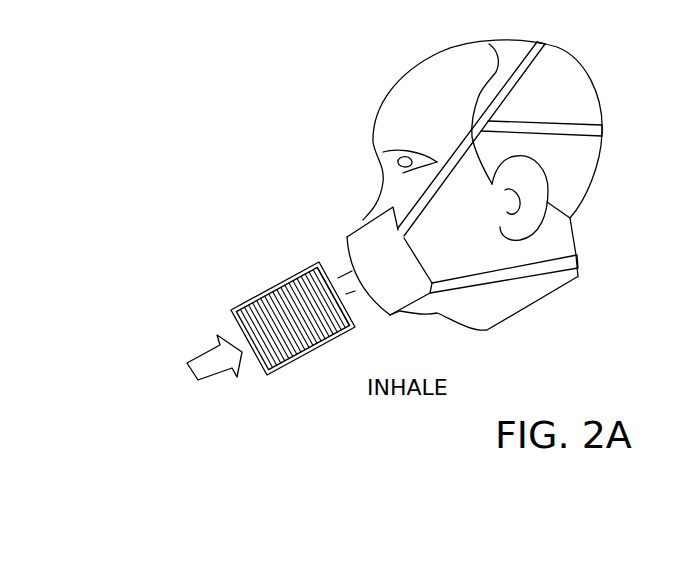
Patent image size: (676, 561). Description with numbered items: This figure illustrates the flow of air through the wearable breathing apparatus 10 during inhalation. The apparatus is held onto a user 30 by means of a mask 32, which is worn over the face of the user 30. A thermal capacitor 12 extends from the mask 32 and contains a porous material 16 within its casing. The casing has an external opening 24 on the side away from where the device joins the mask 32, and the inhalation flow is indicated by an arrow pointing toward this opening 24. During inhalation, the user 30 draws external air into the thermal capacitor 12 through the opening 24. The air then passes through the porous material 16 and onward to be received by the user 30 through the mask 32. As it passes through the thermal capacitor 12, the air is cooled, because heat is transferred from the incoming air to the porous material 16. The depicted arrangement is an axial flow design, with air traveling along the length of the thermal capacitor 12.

The wearable breathing apparatus 10 is at (360, 80).
The thermal capacitor 12 is at (244, 291).
The porous material 16 is at (327, 325).
The external opening 24 is at (253, 374).
The user 30 is at (433, 75).
The mask 32 is at (358, 238).